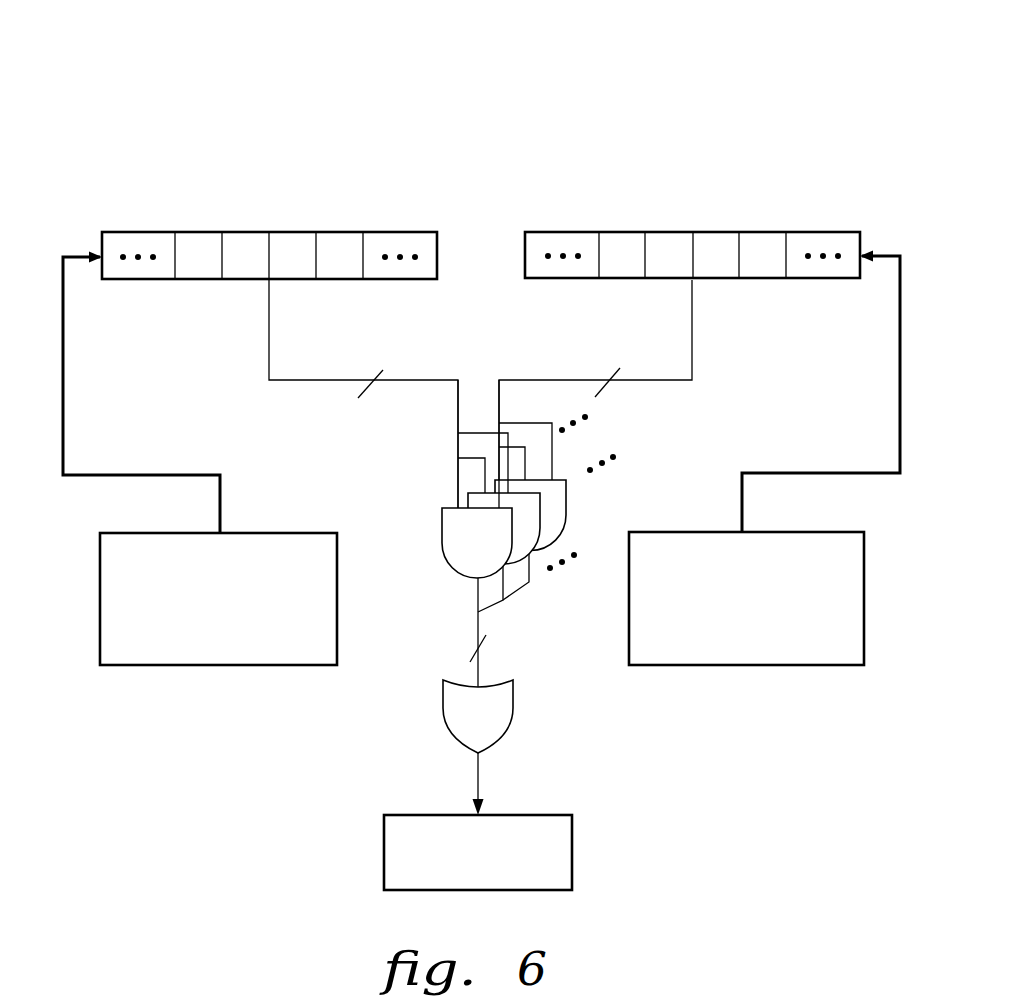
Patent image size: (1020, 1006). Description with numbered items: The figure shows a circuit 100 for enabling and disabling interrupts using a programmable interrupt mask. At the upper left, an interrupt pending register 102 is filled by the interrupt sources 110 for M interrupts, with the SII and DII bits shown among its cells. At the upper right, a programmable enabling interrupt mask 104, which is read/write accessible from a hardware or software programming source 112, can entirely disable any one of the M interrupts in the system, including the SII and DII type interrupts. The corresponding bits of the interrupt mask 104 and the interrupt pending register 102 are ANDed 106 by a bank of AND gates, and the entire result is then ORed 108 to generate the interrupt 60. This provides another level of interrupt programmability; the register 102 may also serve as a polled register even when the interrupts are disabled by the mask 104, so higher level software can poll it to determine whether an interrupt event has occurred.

The circuit 100 is at (502, 91).
The interrupt pending register 102 is at (444, 220).
The interrupt mask 104 is at (756, 155).
The AND gates 106 is at (608, 494).
The OR gate 108 is at (513, 700).
The interrupt sources 110 is at (237, 667).
The hardware or software programming source 112 is at (788, 667).
The interrupt 60 is at (572, 852).